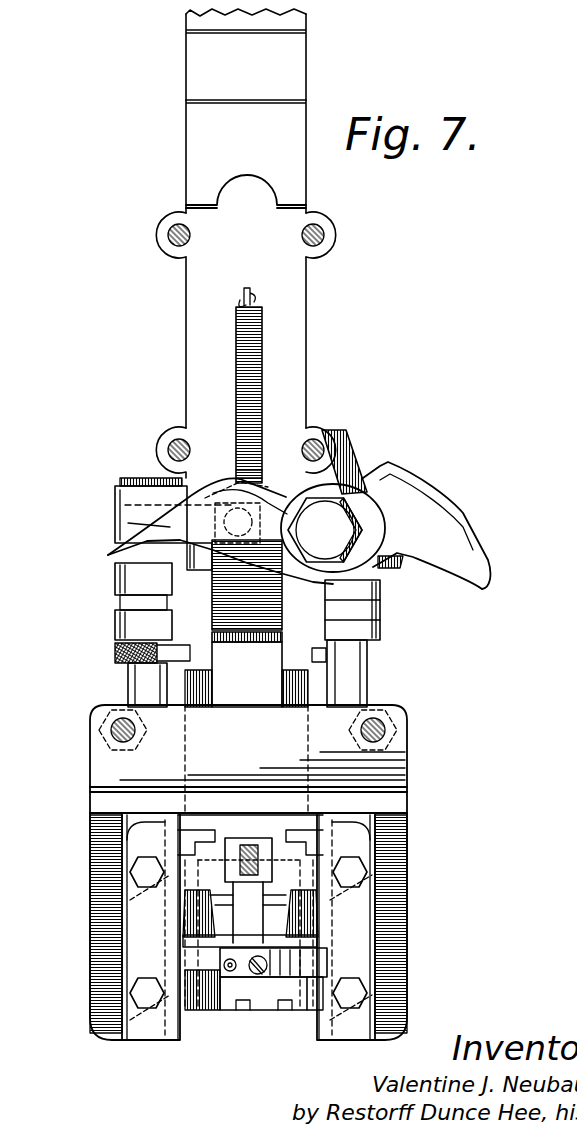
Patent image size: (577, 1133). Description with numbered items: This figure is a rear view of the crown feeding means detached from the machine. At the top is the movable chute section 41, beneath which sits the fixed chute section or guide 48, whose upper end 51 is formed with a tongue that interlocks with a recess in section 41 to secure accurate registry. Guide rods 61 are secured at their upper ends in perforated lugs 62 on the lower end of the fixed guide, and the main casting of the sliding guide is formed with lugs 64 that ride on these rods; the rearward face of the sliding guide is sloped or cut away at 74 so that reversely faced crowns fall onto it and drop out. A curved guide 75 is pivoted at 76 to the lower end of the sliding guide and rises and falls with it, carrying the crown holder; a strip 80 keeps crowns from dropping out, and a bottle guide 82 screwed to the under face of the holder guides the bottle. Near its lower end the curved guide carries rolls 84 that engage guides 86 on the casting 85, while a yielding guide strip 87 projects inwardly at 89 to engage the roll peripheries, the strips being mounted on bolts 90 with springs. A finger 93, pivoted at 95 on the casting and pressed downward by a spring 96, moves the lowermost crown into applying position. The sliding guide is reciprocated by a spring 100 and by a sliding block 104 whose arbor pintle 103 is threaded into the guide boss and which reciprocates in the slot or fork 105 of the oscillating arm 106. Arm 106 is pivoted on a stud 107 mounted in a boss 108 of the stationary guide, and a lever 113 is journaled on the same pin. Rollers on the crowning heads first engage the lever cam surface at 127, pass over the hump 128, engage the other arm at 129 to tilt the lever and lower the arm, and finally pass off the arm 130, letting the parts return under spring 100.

The chute section 41 is at (178, 138).
The fixed chute section or guide 48 is at (178, 288).
The upper end of the fixed section 51 is at (255, 193).
The guide rods 61 is at (128, 688).
The perforated lugs 62 is at (135, 492).
The lugs 64 is at (113, 581).
The sloped rearward face 74 is at (258, 632).
The curved guide 75 is at (258, 692).
The pivot 76 is at (327, 655).
The strip 80 is at (192, 1010).
The bottle guide 82 is at (268, 1012).
The rolls 84 is at (100, 882).
The casting 85 is at (90, 787).
The guides 86 is at (178, 1025).
The yielding guide strip 87 is at (137, 962).
The inward projections 89 is at (178, 1035).
The bolts 90 is at (133, 867).
The finger 93 is at (242, 895).
The pivot 95 is at (173, 905).
The spring 96 is at (248, 840).
The spring 100 is at (263, 367).
The arbor pintle 103 is at (202, 562).
The sliding block 104 is at (283, 568).
The slot or fork 105 is at (125, 505).
The oscillating arm 106 is at (275, 497).
The stud or arbor 107 is at (338, 530).
The boss 108 is at (400, 564).
The lever 113 is at (412, 483).
The cam surface engagement point 127 is at (490, 553).
The hump 128 is at (386, 466).
The engagement point on other arm 129 is at (232, 478).
The arm of the lever 130 is at (128, 523).